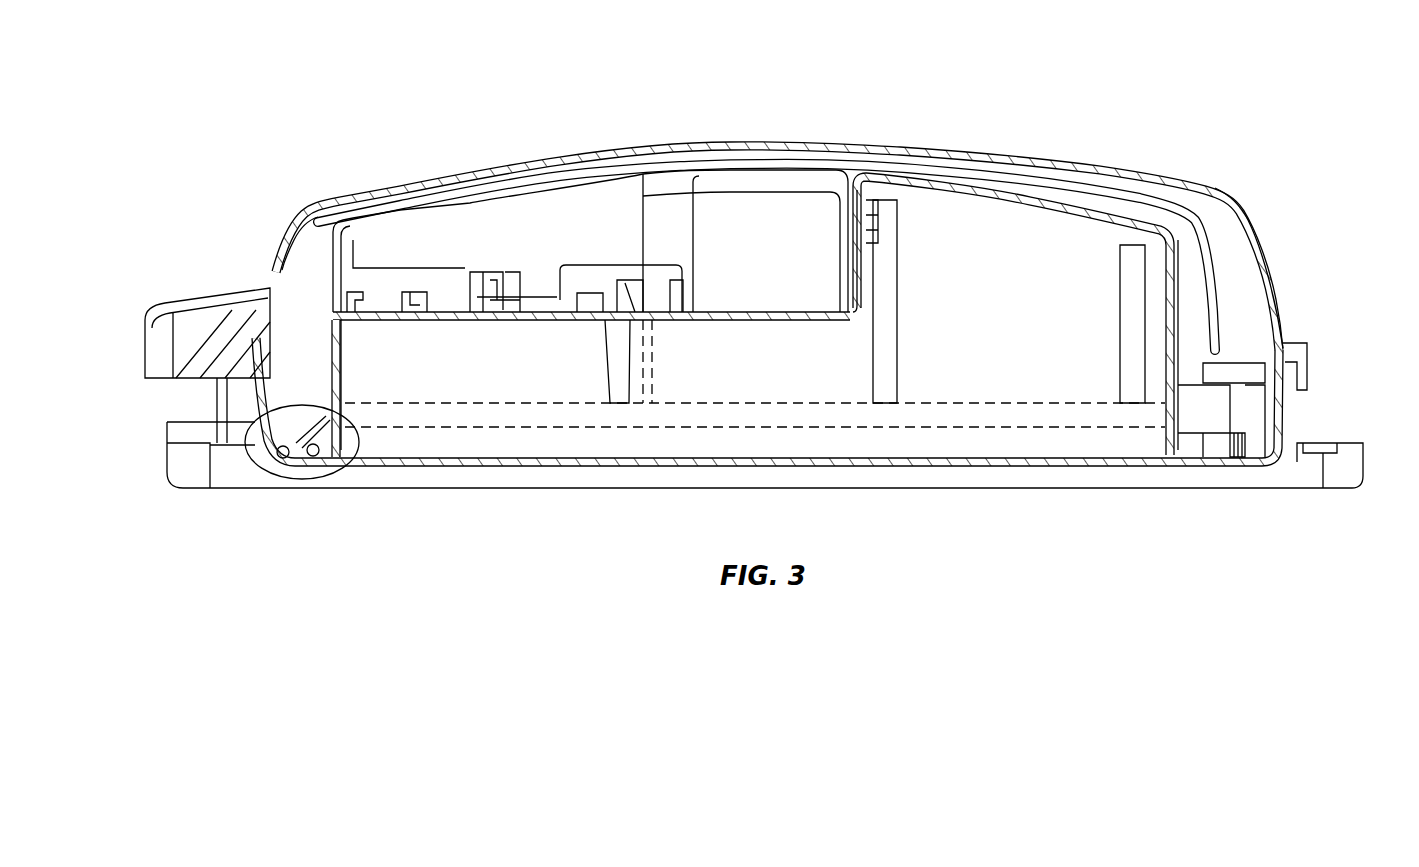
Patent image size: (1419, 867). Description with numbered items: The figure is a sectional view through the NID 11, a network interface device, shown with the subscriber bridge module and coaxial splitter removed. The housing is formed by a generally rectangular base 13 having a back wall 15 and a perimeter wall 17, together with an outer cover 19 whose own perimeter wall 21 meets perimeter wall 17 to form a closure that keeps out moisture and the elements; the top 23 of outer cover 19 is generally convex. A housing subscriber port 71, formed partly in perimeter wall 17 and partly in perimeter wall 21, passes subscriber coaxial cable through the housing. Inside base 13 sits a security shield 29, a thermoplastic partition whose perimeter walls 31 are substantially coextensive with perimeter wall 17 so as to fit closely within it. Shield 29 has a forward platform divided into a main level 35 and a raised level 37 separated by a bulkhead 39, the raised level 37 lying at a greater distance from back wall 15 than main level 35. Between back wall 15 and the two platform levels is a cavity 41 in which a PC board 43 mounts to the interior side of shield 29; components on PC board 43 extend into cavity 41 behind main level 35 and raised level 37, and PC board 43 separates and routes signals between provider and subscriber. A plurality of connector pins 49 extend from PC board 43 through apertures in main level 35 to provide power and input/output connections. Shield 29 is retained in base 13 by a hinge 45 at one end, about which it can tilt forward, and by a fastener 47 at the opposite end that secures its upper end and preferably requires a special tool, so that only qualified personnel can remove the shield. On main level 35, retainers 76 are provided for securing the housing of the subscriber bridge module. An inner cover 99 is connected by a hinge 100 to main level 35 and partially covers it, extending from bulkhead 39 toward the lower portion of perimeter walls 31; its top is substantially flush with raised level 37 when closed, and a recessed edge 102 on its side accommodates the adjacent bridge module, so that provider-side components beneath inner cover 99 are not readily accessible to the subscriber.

The NID 11 is at (1308, 259).
The base 13 is at (1280, 442).
The back wall 15 is at (1058, 465).
The perimeter wall 17 is at (262, 385).
The outer cover 19 is at (1222, 192).
The perimeter wall 21 is at (1305, 348).
The top 23 is at (748, 146).
The security shield 29 is at (864, 291).
The perimeter walls 31 is at (1165, 385).
The main level 35 is at (745, 304).
The raised level 37 is at (955, 188).
The bulkhead 39 is at (870, 230).
The cavity 41 is at (778, 364).
The PC board 43 is at (912, 413).
The hinge 45 is at (313, 457).
The fastener 47 is at (1250, 380).
The connector pins 49 is at (665, 366).
The housing subscriber port 71 is at (158, 345).
The retainers 76 is at (560, 262).
The inner cover 99 is at (418, 240).
The hinge 100 is at (512, 280).
The recessed edge 102 is at (457, 270).